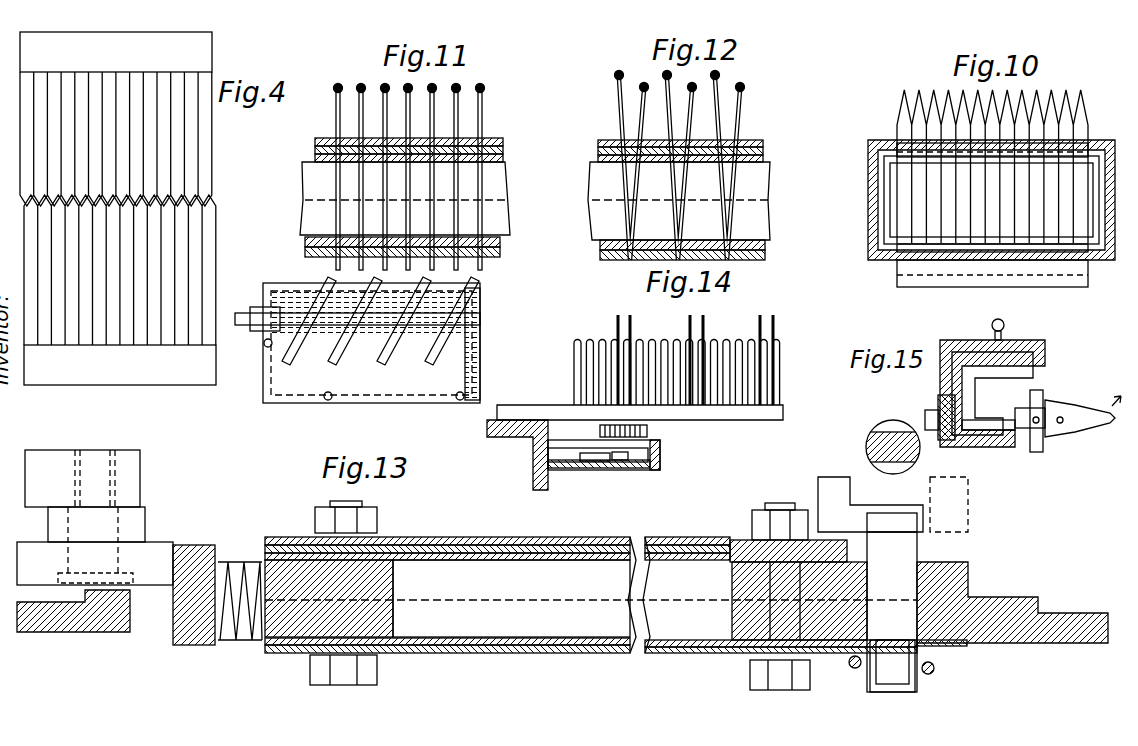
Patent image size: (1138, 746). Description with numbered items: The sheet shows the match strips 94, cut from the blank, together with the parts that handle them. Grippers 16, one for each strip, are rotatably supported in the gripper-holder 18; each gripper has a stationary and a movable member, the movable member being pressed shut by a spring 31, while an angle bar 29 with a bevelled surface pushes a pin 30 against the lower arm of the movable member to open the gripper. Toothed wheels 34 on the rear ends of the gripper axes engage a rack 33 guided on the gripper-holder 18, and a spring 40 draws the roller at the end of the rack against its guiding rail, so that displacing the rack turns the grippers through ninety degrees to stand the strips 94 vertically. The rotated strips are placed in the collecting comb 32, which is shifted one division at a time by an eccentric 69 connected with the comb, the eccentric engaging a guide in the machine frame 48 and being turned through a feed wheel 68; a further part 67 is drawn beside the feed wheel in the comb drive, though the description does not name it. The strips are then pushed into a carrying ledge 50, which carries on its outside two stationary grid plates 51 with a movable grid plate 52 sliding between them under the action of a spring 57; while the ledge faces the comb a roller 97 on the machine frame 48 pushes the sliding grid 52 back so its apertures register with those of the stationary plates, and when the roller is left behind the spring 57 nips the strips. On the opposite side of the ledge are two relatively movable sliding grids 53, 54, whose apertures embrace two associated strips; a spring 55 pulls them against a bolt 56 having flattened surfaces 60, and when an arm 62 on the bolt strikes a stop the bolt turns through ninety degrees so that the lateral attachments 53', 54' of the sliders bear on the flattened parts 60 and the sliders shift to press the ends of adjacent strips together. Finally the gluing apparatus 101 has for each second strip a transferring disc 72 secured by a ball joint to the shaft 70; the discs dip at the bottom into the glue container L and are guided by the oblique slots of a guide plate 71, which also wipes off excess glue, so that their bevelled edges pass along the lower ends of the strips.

In FIG. 4, the match strips 94 is at (208, 66).
In FIG. 10, the match strips 94 is at (1083, 128).
In FIG. 14, the match strips 94 is at (631, 326).
In FIG. 11, the stationary grid plates 51 is at (494, 140).
In FIG. 12, the stationary grid plates 51 is at (757, 142).
In FIG. 10, the stationary grid plates 51 is at (870, 180).
In FIG. 13, the stationary grid plates 51 is at (422, 538).
In FIG. 11, the movable grid plate 52 is at (505, 152).
In FIG. 12, the movable grid plate 52 is at (765, 154).
In FIG. 10, the movable grid plate 52 is at (905, 144).
In FIG. 13, the movable grid plate 52 is at (215, 545).
In FIG. 11, the sliding grid 53 is at (409, 261).
In FIG. 12, the sliding grid 53 is at (685, 268).
In FIG. 10, the sliding grid 53 is at (976, 272).
In FIG. 13, the sliding grid 53 is at (591, 667).
In FIG. 11, the sliding grid 54 is at (421, 262).
In FIG. 12, the sliding grid 54 is at (697, 268).
In FIG. 10, the sliding grid 54 is at (989, 286).
In FIG. 13, the sliding grid 54 is at (591, 671).
In FIG. 11, the shaft 70 is at (238, 313).
In FIG. 11, the guide plate 71 is at (470, 346).
In FIG. 11, the transferring disc 72 is at (318, 281).
In FIG. 11, the gluing apparatus 101 is at (482, 372).
In FIG. 11, the glue container L is at (268, 384).
In FIG. 14, the collecting comb 32 is at (785, 385).
In FIG. 14, the machine frame 48 is at (533, 463).
In FIG. 13, the machine frame 48 is at (136, 466).
In FIG. 14, the pin 67 is at (626, 462).
In FIG. 14, the feed wheel 68 is at (598, 432).
In FIG. 14, the eccentric 69 is at (592, 462).
In FIG. 15, the rack 33 is at (955, 340).
In FIG. 15, the spring 40 is at (1005, 326).
In FIG. 15, the gripper-holder 18 is at (980, 381).
In FIG. 15, the toothed wheels 34 is at (936, 406).
In FIG. 15, the flattened surfaces 60 is at (884, 428).
In FIG. 13, the flattened surfaces 60 is at (900, 678).
In FIG. 15, the spring 31 is at (1040, 397).
In FIG. 15, the pin 30 is at (1030, 452).
In FIG. 15, the angle bar 29 is at (998, 448).
In FIG. 15, the grippers 16 is at (1092, 408).
In FIG. 13, the roller 97 is at (138, 531).
In FIG. 13, the carrying ledge 50 is at (100, 632).
In FIG. 13, the spring 57 is at (250, 645).
In FIG. 13, the bolt 56 is at (920, 551).
In FIG. 13, the arm 62 is at (850, 495).
In FIG. 13, the spring 55 is at (935, 668).
In FIG. 13, the lateral attachment 53' is at (841, 679).
In FIG. 13, the lateral attachment 54' is at (947, 672).